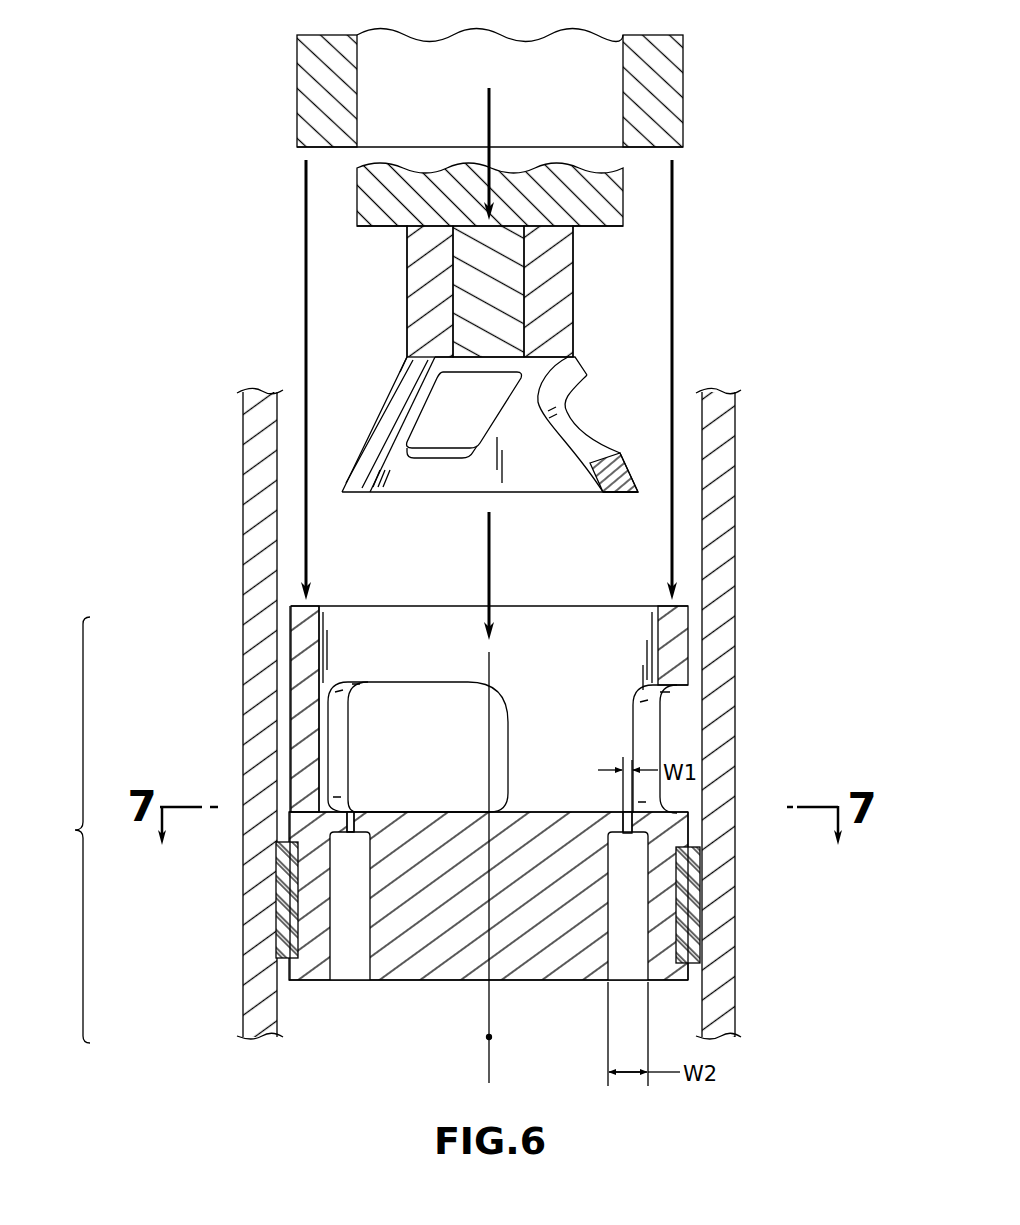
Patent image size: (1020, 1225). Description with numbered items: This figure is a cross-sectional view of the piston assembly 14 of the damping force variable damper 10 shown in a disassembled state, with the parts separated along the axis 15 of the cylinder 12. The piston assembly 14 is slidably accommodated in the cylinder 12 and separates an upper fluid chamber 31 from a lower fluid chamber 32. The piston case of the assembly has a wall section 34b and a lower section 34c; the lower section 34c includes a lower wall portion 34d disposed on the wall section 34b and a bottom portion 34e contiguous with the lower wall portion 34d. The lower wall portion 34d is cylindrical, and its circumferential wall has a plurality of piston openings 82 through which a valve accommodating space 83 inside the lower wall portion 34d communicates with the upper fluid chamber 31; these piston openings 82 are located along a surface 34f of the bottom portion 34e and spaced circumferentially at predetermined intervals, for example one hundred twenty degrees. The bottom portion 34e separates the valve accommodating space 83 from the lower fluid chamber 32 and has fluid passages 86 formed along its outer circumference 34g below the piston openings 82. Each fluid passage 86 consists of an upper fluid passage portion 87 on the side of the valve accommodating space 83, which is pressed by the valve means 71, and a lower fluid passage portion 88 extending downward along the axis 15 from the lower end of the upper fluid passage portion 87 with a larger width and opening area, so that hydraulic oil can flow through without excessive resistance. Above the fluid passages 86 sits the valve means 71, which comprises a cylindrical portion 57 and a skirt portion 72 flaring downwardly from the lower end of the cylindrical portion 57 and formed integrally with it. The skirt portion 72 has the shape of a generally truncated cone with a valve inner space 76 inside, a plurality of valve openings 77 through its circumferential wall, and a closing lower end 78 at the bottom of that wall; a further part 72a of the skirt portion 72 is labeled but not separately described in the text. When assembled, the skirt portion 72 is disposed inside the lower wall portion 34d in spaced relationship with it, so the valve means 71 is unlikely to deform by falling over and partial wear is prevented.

The damping force variable damper 10 is at (205, 233).
The cylinder 12 is at (243, 481).
The piston assembly 14 is at (268, 358).
The axis 15 is at (492, 1037).
The upper fluid chamber 31 is at (428, 821).
The lower fluid chamber 32 is at (383, 1050).
The wall section 34b is at (306, 79).
The lower section 34c is at (60, 830).
The lower wall portion 34d is at (297, 647).
The bottom portion 34e is at (306, 918).
The surface of the bottom portion 34f is at (577, 812).
The outer circumference of the bottom portion 34g is at (688, 836).
The cylindrical portion 57 is at (560, 278).
The valve means 71 is at (383, 397).
The skirt portion 72 is at (368, 440).
The edge of inclined surface 72a is at (388, 352).
The valve inner space 76 is at (515, 472).
The valve openings 77 is at (585, 437).
The closing lower end 78 is at (622, 494).
The piston openings 82 is at (330, 735).
The valve accommodating space 83 is at (541, 683).
The fluid passages 86 is at (489, 896).
The upper fluid passage portion 87 is at (352, 830).
The lower fluid passage portion 88 is at (434, 836).